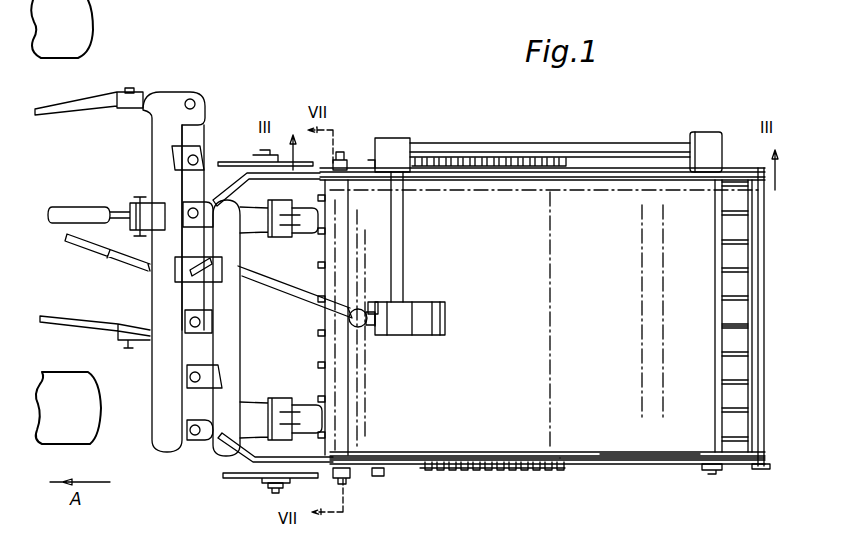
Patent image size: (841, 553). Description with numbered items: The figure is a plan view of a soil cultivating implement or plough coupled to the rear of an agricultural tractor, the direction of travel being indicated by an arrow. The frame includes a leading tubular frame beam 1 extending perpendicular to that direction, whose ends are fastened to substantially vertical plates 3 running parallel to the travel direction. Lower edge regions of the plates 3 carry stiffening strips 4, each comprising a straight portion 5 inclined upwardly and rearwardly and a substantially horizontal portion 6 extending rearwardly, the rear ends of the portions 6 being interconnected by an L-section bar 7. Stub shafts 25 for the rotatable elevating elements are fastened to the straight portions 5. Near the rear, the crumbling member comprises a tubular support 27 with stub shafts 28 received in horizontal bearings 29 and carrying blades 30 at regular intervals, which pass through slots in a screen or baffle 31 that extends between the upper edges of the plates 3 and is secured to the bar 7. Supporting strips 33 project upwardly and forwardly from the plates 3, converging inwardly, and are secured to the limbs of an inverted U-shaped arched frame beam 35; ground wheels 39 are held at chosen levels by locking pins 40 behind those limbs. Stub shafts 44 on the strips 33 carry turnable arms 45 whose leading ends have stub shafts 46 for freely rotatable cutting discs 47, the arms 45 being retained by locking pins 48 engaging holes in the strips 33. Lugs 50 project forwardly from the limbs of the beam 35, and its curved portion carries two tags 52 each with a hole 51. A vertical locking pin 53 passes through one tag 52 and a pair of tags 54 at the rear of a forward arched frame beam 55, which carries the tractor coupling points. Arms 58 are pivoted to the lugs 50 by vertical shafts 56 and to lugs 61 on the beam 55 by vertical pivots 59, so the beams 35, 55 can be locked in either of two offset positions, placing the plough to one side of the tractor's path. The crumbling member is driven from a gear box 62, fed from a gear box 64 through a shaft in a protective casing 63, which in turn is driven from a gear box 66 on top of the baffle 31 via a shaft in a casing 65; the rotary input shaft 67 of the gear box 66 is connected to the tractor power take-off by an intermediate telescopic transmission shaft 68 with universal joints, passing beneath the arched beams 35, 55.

The frame beam 1 is at (348, 384).
The vertical plates 3 is at (618, 180).
The stiffening strips 4 is at (588, 166).
The straight portion 5 is at (506, 458).
The horizontal portion 6 is at (592, 458).
The bar 7 is at (762, 310).
The stub shafts 25 is at (474, 470).
The tubular support 27 is at (718, 258).
The stub shafts 28 is at (758, 468).
The horizontal bearings 29 is at (712, 468).
The blades 30 is at (730, 345).
The screen or baffle 31 is at (672, 455).
The supporting strips 33 is at (235, 452).
The arched frame beam 35 is at (245, 366).
The ground wheels 39 is at (305, 238).
The locking pins 40 is at (318, 418).
The stub shafts 44 is at (340, 158).
The arms 45 is at (360, 476).
The stub shafts 46 is at (270, 490).
The cutting discs 47 is at (228, 162).
The locking pins 48 is at (380, 478).
The lugs 50 is at (193, 210).
The hole 51 is at (190, 378).
The tags 52 is at (215, 272).
The locking pin 53 is at (185, 268).
The tags 54 is at (197, 150).
The arched frame beam 55 is at (150, 140).
The shafts 56 is at (190, 430).
The arms 58 is at (203, 115).
The pivots 59 is at (190, 99).
The lugs 61 is at (176, 97).
The gear box 62 is at (703, 140).
The protective casing 63 is at (488, 157).
The gear box 64 is at (393, 148).
The casing 65 is at (403, 262).
The gear box 66 is at (405, 310).
The rotary input shaft 67 is at (372, 304).
The intermediate telescopic transmission shaft 68 is at (312, 312).